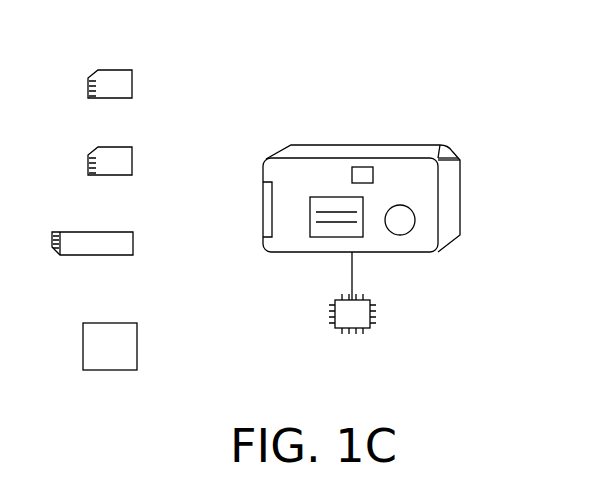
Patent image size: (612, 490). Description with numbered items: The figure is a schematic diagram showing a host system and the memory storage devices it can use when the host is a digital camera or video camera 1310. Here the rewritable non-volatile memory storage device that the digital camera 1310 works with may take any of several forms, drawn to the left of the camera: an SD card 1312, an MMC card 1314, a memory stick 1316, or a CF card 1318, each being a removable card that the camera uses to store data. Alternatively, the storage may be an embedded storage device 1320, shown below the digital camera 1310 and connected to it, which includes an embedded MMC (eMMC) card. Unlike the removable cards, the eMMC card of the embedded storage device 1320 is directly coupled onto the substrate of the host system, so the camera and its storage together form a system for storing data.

The digital camera 1310 is at (460, 183).
The SD card 1312 is at (133, 75).
The MMC card 1314 is at (133, 150).
The memory stick 1316 is at (133, 243).
The CF card 1318 is at (137, 340).
The embedded storage device 1320 is at (377, 315).